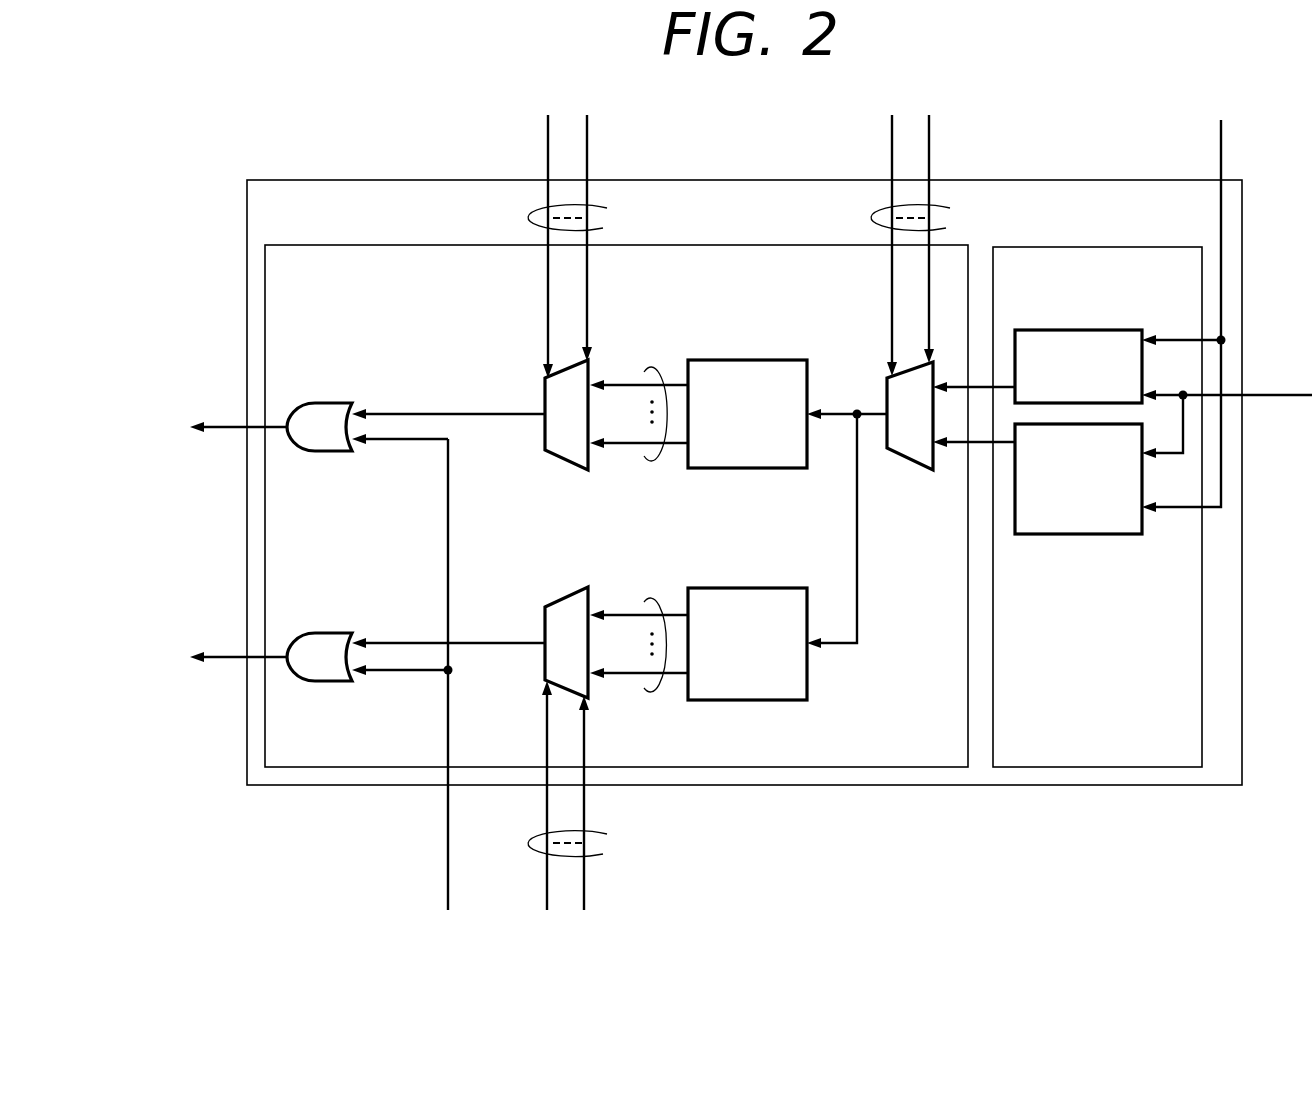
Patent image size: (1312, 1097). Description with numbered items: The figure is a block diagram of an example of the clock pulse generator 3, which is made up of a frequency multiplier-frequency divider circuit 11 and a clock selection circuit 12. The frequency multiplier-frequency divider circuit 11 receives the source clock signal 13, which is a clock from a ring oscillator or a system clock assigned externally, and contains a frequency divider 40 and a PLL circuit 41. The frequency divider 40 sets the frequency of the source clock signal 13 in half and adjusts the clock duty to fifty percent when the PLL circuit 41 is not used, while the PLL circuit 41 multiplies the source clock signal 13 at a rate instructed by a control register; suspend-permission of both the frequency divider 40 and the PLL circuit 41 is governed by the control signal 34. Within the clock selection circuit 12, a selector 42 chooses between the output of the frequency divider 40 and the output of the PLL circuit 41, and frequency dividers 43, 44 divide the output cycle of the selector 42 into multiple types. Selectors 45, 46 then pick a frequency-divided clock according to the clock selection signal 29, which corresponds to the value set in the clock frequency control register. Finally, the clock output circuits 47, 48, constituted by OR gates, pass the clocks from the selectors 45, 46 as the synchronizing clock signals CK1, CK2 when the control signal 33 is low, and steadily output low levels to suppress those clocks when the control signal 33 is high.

The clock pulse generator 3 is at (1018, 180).
The frequency multiplier-frequency divider circuit 11 is at (1152, 247).
The clock selection circuit 12 is at (765, 245).
The source clock signal 13 is at (1270, 395).
The clock selection signal 29 is at (610, 214).
The control signal 33 is at (447, 866).
The control signal 34 is at (1220, 152).
The frequency divider 40 is at (1105, 329).
The PLL circuit 41 is at (1058, 535).
The selector 42 is at (908, 463).
The frequency divider 43 is at (755, 360).
The frequency divider 44 is at (755, 588).
The selector 45 is at (567, 465).
The selector 46 is at (570, 603).
The clock output circuit 47 is at (332, 402).
The clock output circuit 48 is at (332, 632).